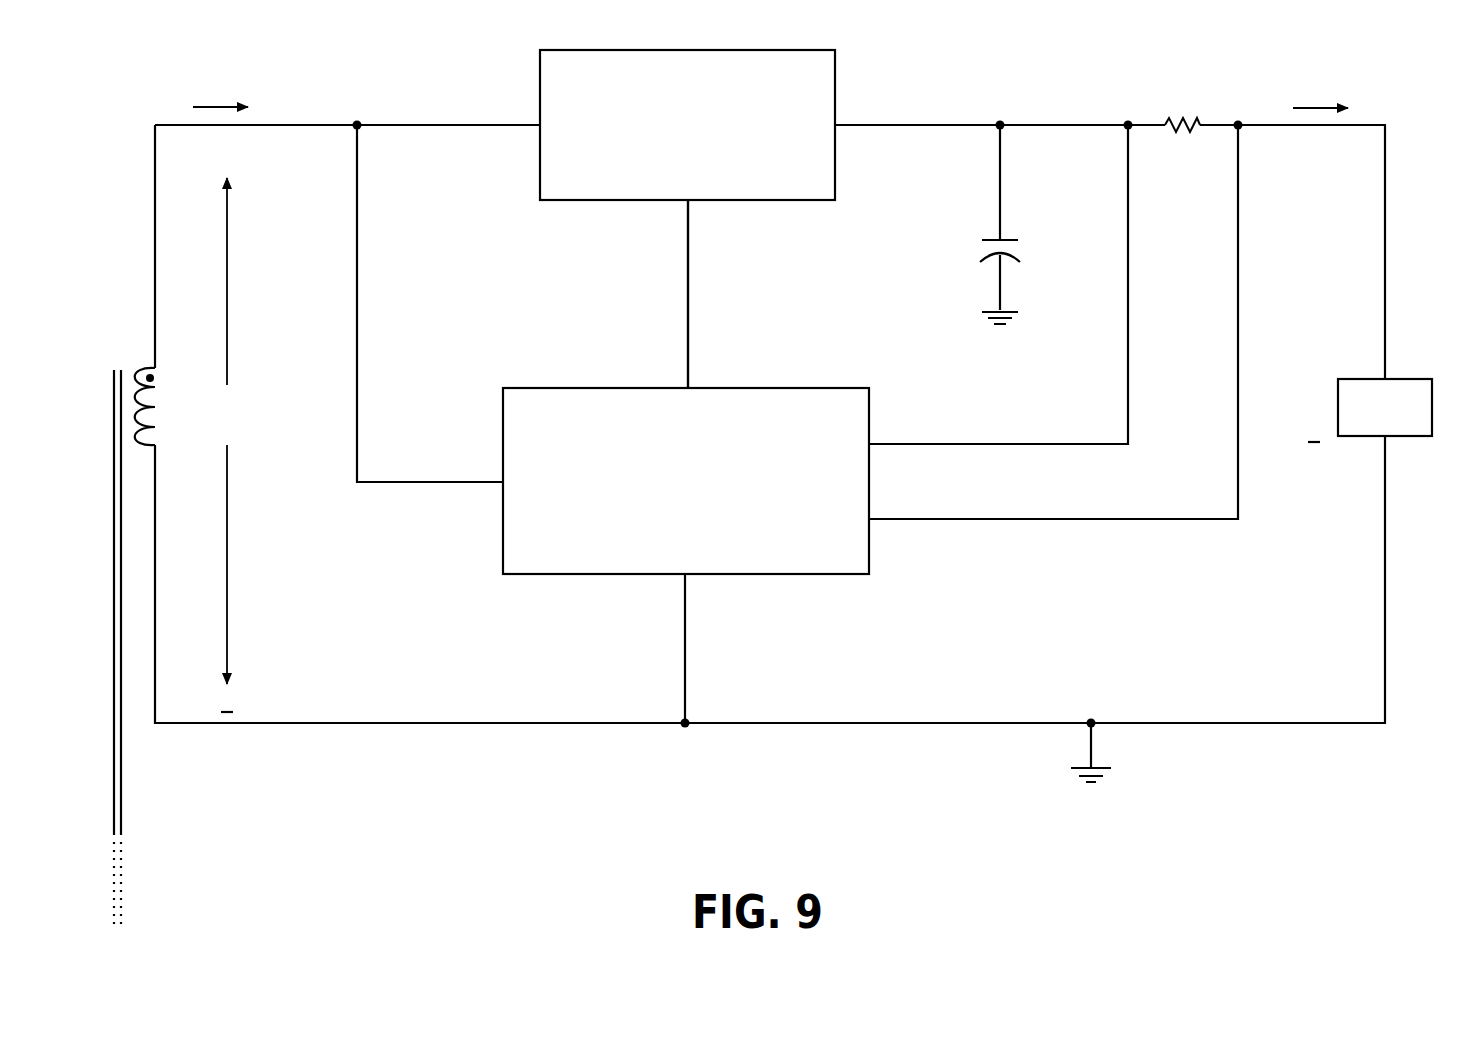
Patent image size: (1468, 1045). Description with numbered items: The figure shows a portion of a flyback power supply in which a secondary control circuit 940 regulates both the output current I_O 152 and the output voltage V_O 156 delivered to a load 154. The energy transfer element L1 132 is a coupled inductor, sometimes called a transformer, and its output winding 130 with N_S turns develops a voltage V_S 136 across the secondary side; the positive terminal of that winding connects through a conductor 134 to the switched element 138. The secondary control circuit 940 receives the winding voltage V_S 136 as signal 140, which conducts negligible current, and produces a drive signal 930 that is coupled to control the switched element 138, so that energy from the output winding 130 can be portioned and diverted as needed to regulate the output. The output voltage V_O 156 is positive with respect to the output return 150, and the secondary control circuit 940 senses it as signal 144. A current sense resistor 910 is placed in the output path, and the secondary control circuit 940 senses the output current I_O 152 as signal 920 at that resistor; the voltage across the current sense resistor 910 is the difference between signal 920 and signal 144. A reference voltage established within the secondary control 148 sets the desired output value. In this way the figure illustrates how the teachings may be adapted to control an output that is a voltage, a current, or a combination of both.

The output winding 130 is at (152, 424).
The energy transfer element L1 132 is at (128, 778).
The secondary current Is path 134 is at (208, 104).
The voltage V_S 136 is at (243, 418).
The switched element 138 is at (530, 80).
The signal 140 is at (362, 236).
The signal 144 is at (1233, 316).
The secondary control 148 is at (1016, 218).
The output return 150 is at (980, 302).
The output current I_O 152 is at (1308, 100).
The load 154 is at (1398, 372).
The output voltage V_O 156 is at (1308, 418).
The current sense resistor 910 is at (1180, 110).
The signal 920 is at (1134, 238).
The drive signal 930 is at (700, 300).
The secondary control circuit 940 is at (558, 382).